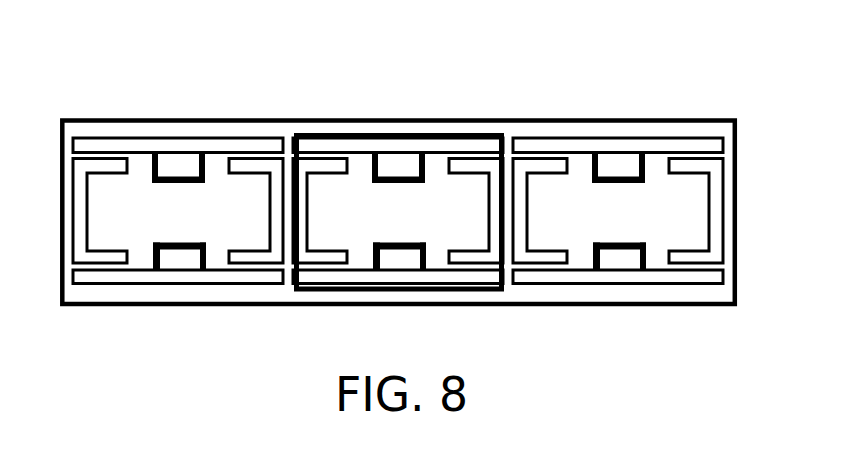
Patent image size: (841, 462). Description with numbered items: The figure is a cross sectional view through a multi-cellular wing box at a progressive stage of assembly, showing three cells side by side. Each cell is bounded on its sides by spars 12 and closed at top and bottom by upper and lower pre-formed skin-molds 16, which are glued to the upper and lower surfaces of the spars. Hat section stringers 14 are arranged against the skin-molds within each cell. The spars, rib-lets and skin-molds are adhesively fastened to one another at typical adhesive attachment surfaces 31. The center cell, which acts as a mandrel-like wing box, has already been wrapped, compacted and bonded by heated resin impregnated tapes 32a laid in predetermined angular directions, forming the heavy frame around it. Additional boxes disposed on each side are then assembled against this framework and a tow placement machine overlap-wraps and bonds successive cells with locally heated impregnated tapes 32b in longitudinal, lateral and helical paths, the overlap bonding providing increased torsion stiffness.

The spars 12 is at (720, 223).
The hat section stringer 14 is at (178, 170).
The pre-formed skin-molds 16 is at (603, 145).
The adhesive attachment surface 31 is at (258, 253).
The resin impregnated composite fiber tape 32a is at (423, 134).
The resin impregnated composite fiber tape 32b is at (320, 118).